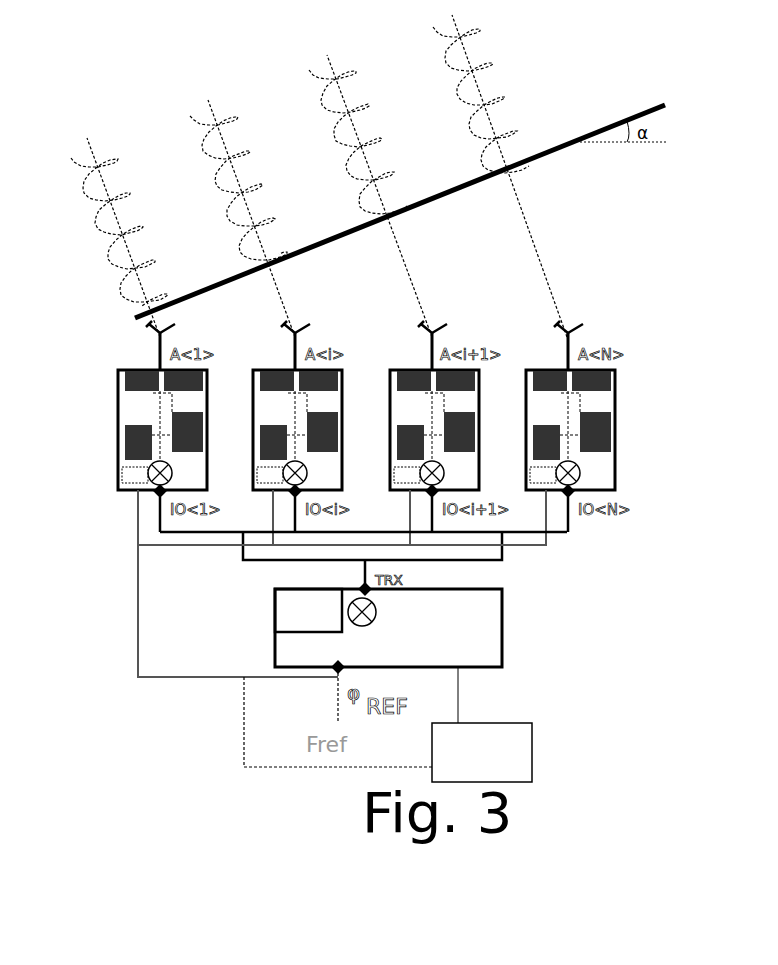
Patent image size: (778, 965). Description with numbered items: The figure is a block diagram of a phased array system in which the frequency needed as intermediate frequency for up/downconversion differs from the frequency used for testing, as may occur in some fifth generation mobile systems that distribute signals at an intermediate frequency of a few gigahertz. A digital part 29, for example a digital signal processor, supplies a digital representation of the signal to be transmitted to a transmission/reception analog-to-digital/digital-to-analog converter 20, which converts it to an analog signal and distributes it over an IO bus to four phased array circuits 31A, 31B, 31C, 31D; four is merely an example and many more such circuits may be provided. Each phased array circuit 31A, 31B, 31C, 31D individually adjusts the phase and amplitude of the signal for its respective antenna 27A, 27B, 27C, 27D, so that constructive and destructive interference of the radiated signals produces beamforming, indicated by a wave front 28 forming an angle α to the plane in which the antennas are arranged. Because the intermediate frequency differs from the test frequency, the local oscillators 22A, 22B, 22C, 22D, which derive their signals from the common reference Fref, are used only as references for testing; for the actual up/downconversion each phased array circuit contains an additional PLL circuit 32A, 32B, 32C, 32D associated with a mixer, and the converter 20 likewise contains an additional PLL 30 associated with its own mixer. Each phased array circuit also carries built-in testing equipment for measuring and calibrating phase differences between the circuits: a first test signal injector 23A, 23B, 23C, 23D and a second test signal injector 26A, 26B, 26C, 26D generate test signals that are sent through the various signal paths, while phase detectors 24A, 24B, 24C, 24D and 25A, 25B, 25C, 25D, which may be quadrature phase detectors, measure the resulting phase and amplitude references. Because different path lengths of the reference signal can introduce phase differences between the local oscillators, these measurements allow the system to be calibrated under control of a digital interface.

The TRX AD/DA converter 20 is at (504, 617).
The wave front 28 is at (560, 140).
The digital part 29 is at (534, 760).
The additional PLL 30 is at (275, 606).
The local oscillator 22A is at (100, 442).
The local oscillator 22B is at (256, 442).
The local oscillator 22C is at (388, 442).
The local oscillator 22D is at (525, 442).
The first test signal injector 23A is at (109, 366).
The first test signal injector 23B is at (262, 366).
The first test signal injector 23C is at (401, 359).
The first test signal injector 23D is at (533, 367).
The phase detector 24A is at (212, 358).
The phase detector 24B is at (348, 369).
The phase detector 24C is at (485, 360).
The phase detector 24D is at (624, 360).
The phase detector 25A is at (220, 377).
The phase detector 25B is at (356, 377).
The phase detector 25C is at (493, 377).
The phase detector 25D is at (632, 372).
The second test signal injector 26A is at (216, 430).
The second test signal injector 26B is at (348, 431).
The second test signal injector 26C is at (485, 432).
The second test signal injector 26D is at (622, 431).
The antenna 27A is at (208, 328).
The antenna 27B is at (343, 326).
The antenna 27C is at (478, 328).
The antenna 27D is at (615, 328).
The phased array circuit 31A is at (122, 457).
The phased array circuit 31B is at (275, 457).
The phased array circuit 31C is at (412, 457).
The phased array circuit 31D is at (550, 457).
The additional PLL circuit 32A is at (85, 481).
The additional PLL circuit 32B is at (247, 474).
The additional PLL circuit 32C is at (381, 494).
The additional PLL circuit 32D is at (517, 478).